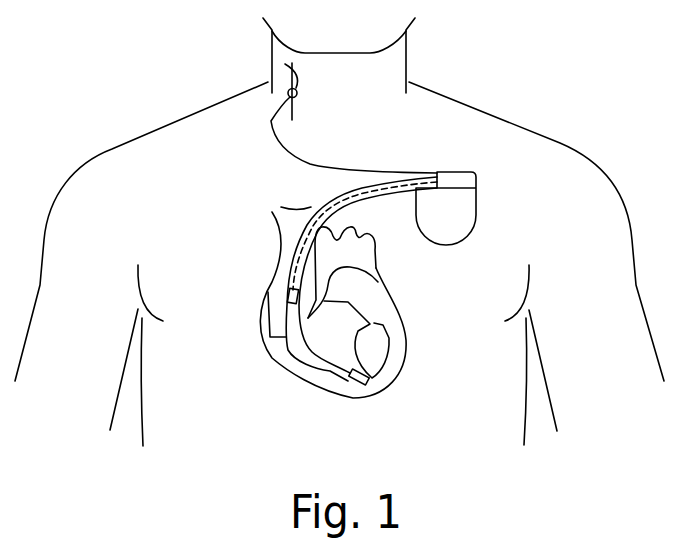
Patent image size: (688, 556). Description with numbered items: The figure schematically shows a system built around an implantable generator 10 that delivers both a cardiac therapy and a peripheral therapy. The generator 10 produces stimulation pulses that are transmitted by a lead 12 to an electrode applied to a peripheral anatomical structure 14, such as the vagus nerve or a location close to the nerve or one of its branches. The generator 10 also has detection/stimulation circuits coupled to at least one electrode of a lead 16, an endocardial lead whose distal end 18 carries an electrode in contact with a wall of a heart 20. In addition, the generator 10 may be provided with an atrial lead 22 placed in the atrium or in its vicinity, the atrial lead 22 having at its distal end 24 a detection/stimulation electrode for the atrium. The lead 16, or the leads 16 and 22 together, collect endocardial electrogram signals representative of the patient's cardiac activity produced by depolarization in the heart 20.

The implantable generator 10 is at (451, 212).
The lead 12 is at (271, 122).
The peripheral anatomical structure 14 is at (296, 88).
The lead 16 is at (312, 279).
The distal end 18 is at (316, 356).
The heart 20 is at (397, 368).
The atrial lead 22 is at (378, 192).
The distal end 24 is at (287, 297).